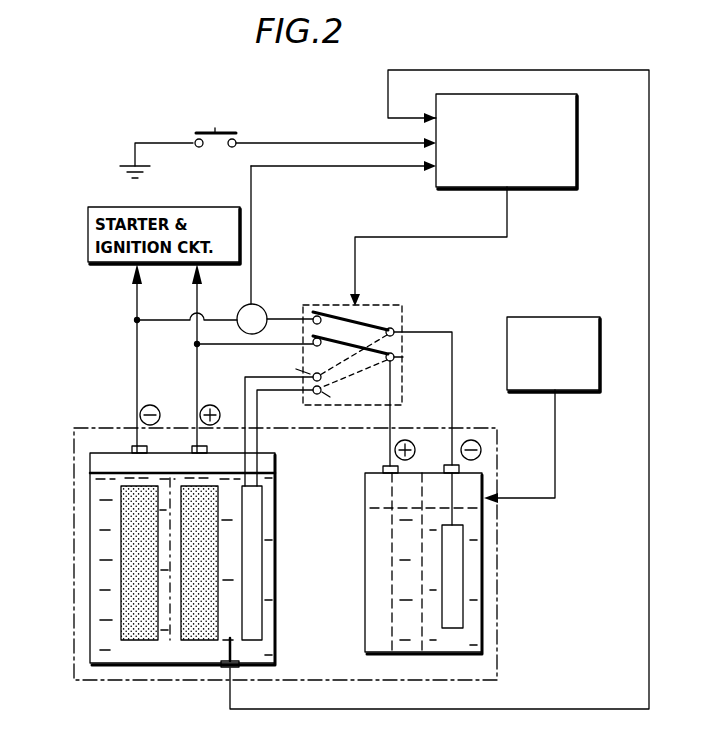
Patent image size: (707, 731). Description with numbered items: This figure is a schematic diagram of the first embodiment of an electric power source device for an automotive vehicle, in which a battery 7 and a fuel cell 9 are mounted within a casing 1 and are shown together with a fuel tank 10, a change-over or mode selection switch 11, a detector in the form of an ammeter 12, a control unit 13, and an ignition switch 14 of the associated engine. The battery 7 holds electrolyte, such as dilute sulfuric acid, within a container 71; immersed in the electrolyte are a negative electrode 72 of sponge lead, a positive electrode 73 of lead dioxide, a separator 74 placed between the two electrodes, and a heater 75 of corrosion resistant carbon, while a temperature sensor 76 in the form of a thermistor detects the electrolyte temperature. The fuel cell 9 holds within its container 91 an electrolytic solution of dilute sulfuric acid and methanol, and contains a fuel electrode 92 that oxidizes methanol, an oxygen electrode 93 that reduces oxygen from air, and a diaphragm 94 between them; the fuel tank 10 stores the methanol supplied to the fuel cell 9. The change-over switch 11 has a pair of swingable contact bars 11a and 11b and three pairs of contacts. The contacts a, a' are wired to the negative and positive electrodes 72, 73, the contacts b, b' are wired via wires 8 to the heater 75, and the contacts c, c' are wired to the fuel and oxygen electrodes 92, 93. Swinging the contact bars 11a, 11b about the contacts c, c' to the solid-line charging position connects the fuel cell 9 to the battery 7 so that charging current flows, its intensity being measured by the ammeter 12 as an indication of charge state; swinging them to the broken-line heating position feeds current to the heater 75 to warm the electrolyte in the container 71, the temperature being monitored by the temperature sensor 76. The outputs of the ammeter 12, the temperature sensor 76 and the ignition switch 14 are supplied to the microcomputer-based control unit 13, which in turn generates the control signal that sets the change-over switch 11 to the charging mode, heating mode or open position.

The casing 1 is at (72, 440).
The battery 7 is at (174, 544).
The wires 8 is at (266, 378).
The fuel cell 9 is at (426, 547).
The fuel tank 10 is at (518, 317).
The change-over switch 11 is at (365, 338).
The contact bar 11a is at (368, 317).
The contact bar 11b is at (364, 356).
The ammeter 12 is at (263, 306).
The control unit 13 is at (556, 190).
The ignition switch 14 is at (200, 134).
The container 71 is at (90, 585).
The negative electrode 72 is at (140, 636).
The positive electrode 73 is at (200, 636).
The separator 74 is at (170, 642).
The heater 75 is at (262, 549).
The temperature sensor 76 is at (278, 656).
The container 91 is at (365, 608).
The fuel electrode 92 is at (455, 578).
The oxygen electrode 93 is at (390, 553).
The diaphragm 94 is at (420, 630).